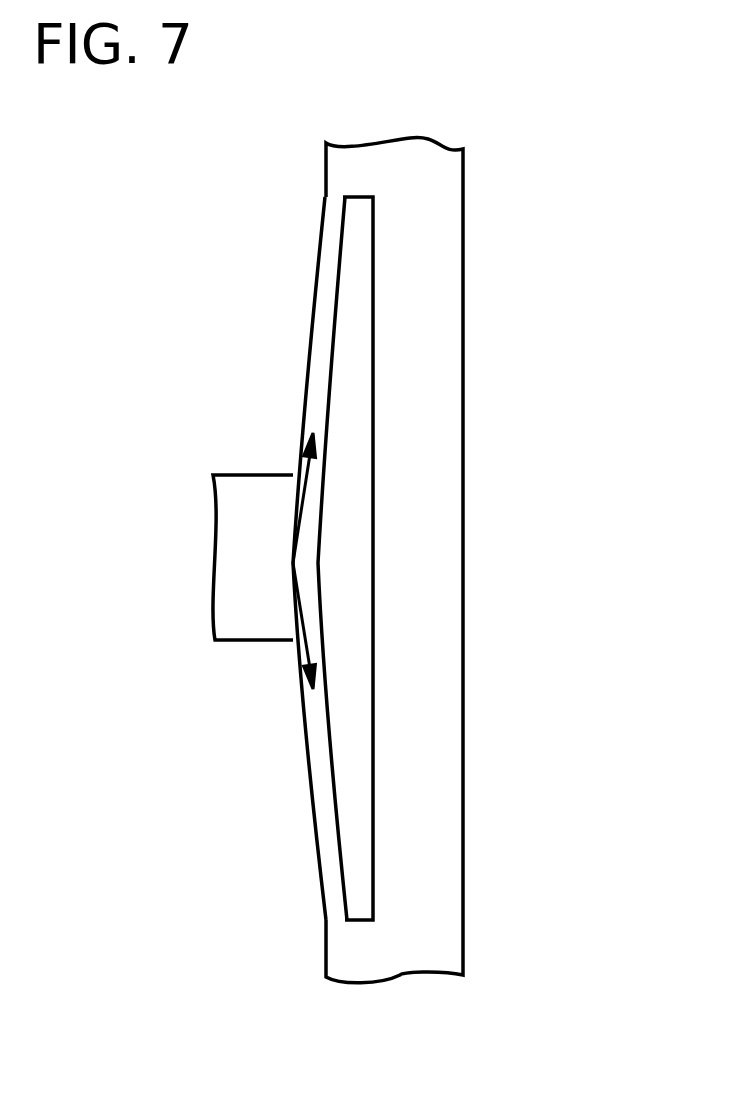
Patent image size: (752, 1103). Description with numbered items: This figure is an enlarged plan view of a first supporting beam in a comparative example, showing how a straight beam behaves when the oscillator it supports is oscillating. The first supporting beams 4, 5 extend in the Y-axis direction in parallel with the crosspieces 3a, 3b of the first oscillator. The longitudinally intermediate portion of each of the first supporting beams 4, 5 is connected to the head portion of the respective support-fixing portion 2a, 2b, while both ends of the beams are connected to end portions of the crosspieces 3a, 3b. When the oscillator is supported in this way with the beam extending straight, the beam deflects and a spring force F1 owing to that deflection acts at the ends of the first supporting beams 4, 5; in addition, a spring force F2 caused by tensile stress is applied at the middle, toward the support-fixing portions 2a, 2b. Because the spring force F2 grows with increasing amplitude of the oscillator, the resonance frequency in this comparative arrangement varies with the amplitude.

The support-fixing portion 2a is at (242, 594).
The support-fixing portion 2b is at (184, 557).
The crosspiece 3a is at (444, 529).
The crosspiece 3b is at (486, 559).
The first supporting beam 4 is at (312, 347).
The first supporting beam 5 is at (274, 558).
The spring force owing to deflection F1 is at (337, 198).
The spring force owing to tensile stress F2 is at (292, 563).